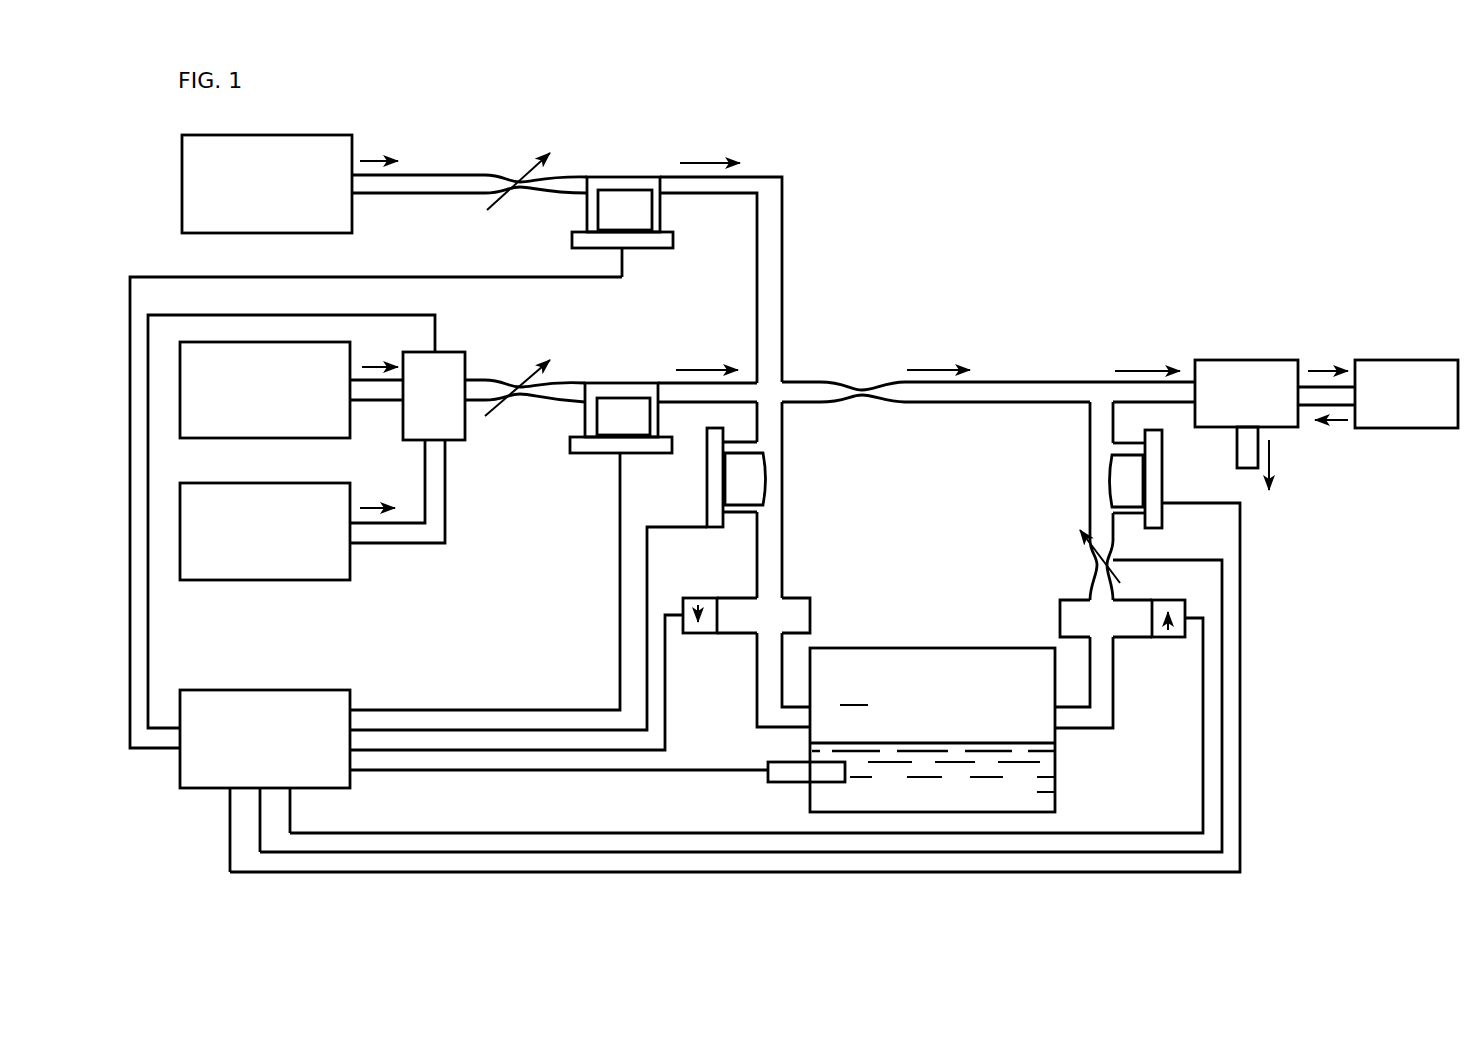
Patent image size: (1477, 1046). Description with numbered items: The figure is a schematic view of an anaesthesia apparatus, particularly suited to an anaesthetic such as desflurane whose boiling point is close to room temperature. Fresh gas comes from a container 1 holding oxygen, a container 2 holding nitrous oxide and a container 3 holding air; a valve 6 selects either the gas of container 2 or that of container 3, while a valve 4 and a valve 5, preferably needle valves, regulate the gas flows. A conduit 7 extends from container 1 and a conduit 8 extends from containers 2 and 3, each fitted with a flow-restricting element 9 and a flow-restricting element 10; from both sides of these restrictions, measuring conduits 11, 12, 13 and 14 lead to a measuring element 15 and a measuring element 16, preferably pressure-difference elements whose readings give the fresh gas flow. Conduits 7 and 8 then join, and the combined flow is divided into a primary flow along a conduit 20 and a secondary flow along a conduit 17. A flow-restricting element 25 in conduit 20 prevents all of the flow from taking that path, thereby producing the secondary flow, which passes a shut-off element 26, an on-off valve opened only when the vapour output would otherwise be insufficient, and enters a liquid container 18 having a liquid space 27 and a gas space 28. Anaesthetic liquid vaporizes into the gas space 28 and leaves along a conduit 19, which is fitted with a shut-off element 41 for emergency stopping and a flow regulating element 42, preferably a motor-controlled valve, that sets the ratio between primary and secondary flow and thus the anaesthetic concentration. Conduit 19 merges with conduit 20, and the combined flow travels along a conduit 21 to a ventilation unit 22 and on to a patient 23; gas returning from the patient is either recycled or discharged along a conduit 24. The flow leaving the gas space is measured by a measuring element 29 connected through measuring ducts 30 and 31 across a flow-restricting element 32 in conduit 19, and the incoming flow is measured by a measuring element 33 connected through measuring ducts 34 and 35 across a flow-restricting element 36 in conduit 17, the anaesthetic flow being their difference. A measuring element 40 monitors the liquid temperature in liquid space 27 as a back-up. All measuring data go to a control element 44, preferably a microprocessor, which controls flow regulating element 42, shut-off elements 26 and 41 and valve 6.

The container 1 is at (182, 195).
The container 2 is at (182, 372).
The container 3 is at (182, 513).
The valve 4 is at (505, 190).
The valve 5 is at (500, 395).
The valve 6 is at (462, 352).
The conduit 7 is at (435, 434).
The conduit 8 is at (553, 519).
The flow-restricting element 9 is at (628, 190).
The flow-restricting element 10 is at (630, 397).
The measuring conduit 11 is at (590, 215).
The measuring conduit 12 is at (655, 218).
The measuring conduit 13 is at (582, 415).
The measuring conduit 14 is at (653, 422).
The measuring element 15 is at (665, 243).
The measuring element 16 is at (602, 458).
The conduit 17 is at (755, 660).
The liquid container 18 is at (981, 702).
The conduit 19 is at (1092, 732).
The conduit 20 is at (975, 383).
The conduit 21 is at (1178, 385).
The ventilation unit 22 is at (1275, 395).
The patient 23 is at (1410, 360).
The conduit 24 is at (1265, 438).
The flow-restricting element 25 is at (860, 395).
The shut-off element 26 is at (797, 598).
The liquid space 27 is at (1050, 795).
The gas space 28 is at (932, 730).
The measuring element 29 is at (735, 599).
The measuring duct 30 is at (1128, 510).
The measuring duct 31 is at (1125, 455).
The flow-restricting element 32 is at (1110, 478).
The measuring element 33 is at (600, 576).
The measuring duct 34 is at (766, 447).
The measuring duct 35 is at (681, 505).
The flow-restricting element 36 is at (782, 483).
The measuring element 40 is at (795, 783).
The shut-off element 41 is at (1070, 608).
The flow regulating element 42 is at (1093, 568).
The control element 44 is at (222, 690).